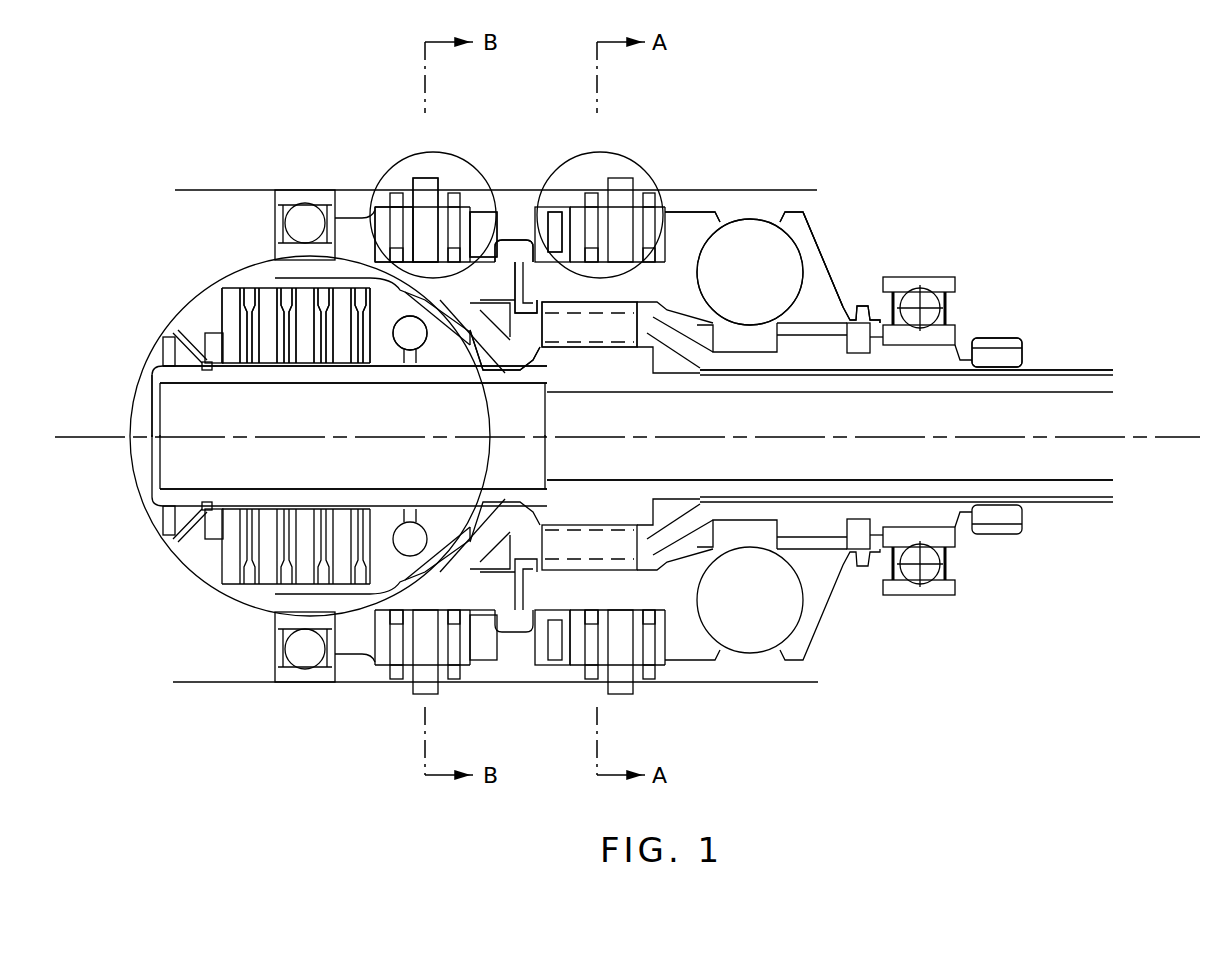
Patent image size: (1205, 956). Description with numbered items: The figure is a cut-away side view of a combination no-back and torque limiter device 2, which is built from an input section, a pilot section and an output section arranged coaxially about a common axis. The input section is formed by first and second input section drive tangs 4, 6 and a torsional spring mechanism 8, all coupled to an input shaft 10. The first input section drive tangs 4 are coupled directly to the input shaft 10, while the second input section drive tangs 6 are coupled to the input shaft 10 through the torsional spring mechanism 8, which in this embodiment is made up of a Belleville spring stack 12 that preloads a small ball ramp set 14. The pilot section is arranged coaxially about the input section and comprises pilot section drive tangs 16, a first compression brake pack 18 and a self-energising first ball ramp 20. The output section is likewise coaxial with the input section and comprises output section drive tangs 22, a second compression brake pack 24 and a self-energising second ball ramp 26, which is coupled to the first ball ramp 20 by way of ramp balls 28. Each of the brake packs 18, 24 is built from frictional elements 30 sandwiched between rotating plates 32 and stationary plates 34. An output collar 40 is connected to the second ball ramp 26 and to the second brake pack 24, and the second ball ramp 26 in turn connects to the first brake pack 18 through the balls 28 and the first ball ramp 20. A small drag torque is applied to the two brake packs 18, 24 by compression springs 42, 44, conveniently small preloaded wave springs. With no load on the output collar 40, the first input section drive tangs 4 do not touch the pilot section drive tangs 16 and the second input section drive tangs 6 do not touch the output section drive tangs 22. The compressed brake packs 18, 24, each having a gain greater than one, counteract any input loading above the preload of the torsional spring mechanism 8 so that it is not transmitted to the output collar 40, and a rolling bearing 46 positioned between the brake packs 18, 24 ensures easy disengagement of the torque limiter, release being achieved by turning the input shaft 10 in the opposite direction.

The combination no-back and torque limiter device 2 is at (912, 203).
The first input section drive tangs 4 is at (607, 362).
The second input section drive tangs 6 is at (442, 357).
The torsional spring mechanism 8 is at (192, 312).
The input shaft 10 is at (1076, 503).
The Belleville spring stack 12 is at (290, 348).
The ball ramp set 14 is at (405, 350).
The pilot section drive tangs 16 is at (642, 305).
The first compression brake pack 18 is at (610, 153).
The first ball ramp 20 is at (685, 225).
The output section drive tangs 22 is at (403, 298).
The second compression brake pack 24 is at (443, 153).
The second ball ramp 26 is at (813, 243).
The ramp balls 28 is at (750, 233).
The frictional elements 30 is at (397, 223).
The rotating plates 32 is at (482, 218).
The stationary plates 34 is at (422, 208).
The output collar 40 is at (1023, 353).
The compression spring 42 is at (512, 300).
The compression spring 44 is at (548, 295).
The rolling bearing 46 is at (557, 215).